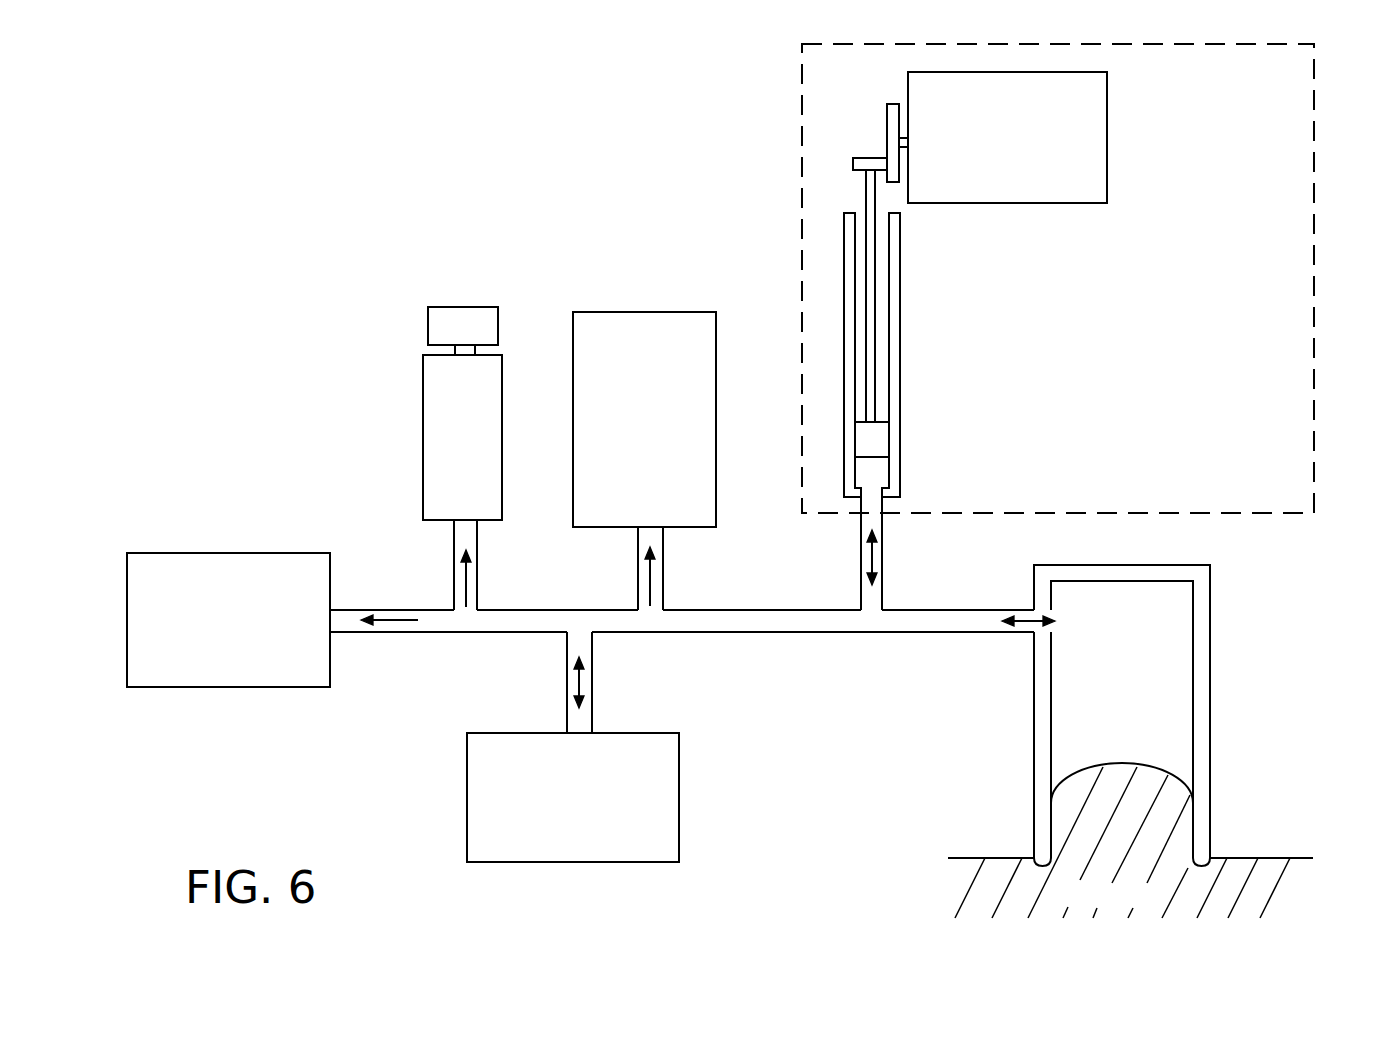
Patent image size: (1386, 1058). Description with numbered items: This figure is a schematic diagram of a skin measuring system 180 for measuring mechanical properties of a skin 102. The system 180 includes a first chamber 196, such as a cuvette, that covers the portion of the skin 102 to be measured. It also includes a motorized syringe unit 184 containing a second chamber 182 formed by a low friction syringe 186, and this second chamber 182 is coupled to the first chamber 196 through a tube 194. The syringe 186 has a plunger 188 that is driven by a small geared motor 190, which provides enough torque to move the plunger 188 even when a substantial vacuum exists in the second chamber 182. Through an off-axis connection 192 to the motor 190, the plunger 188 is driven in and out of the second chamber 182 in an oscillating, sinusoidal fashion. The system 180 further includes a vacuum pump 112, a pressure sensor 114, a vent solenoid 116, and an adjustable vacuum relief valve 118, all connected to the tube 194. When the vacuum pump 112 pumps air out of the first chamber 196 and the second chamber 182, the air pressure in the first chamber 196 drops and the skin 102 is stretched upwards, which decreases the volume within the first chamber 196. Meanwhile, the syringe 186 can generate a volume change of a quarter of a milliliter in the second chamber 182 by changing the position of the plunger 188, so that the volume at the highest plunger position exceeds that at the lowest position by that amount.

The skin measuring system 180 is at (578, 144).
The motorized syringe unit 184 is at (1314, 162).
The geared motor 190 is at (1065, 203).
The off-axis connection 192 is at (867, 158).
The low friction syringe 186 is at (844, 241).
The plunger 188 is at (866, 457).
The second chamber 182 is at (868, 486).
The adjustable vacuum relief valve 118 is at (468, 307).
The vent solenoid 116 is at (658, 312).
The vacuum pump 112 is at (231, 687).
The pressure sensor 114 is at (621, 733).
The tube 194 is at (725, 632).
The first chamber 196 is at (1147, 687).
The skin 102 is at (1170, 886).